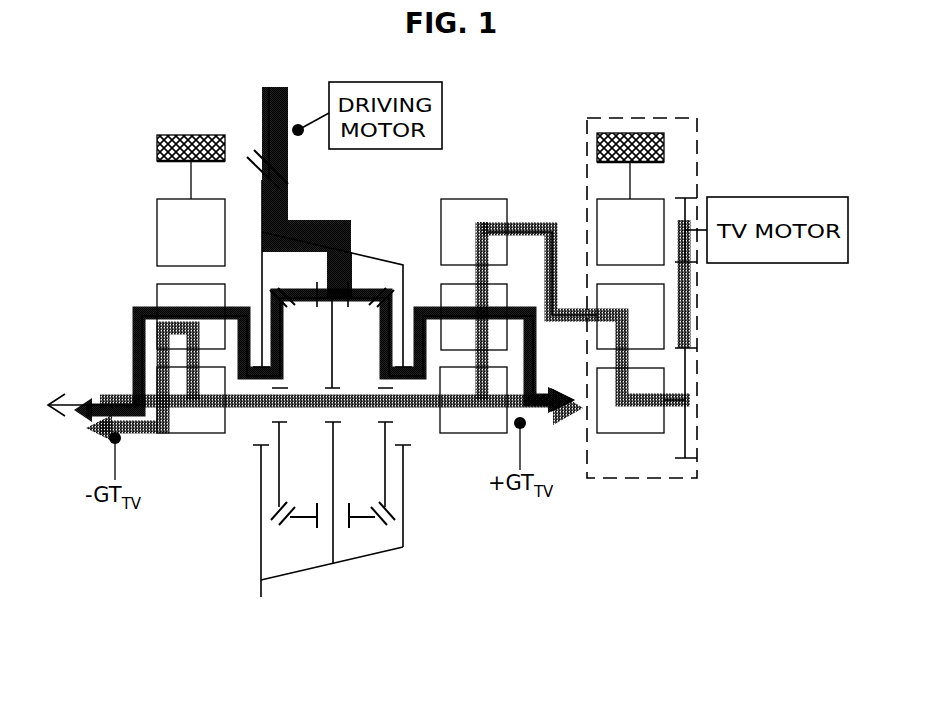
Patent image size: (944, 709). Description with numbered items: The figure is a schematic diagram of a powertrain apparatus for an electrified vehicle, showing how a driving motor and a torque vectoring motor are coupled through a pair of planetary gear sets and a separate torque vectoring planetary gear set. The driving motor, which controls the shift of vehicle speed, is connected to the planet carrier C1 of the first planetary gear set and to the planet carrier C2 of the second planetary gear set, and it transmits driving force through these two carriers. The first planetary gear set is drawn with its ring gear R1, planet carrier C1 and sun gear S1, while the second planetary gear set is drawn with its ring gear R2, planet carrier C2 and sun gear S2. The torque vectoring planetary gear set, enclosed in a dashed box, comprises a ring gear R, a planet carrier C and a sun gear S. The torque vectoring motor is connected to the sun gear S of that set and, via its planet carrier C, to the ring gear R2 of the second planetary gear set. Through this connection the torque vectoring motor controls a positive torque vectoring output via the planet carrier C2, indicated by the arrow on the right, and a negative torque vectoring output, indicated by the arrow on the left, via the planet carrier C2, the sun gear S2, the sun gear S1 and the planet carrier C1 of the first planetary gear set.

The ring gear of first planetary gear set R1 is at (191, 200).
The planet carrier of first planetary gear set C1 is at (191, 316).
The sun gear of first planetary gear set S1 is at (191, 400).
The ring gear of second planetary gear set R2 is at (474, 232).
The planet carrier of second planetary gear set C2 is at (474, 317).
The sun gear of second planetary gear set S2 is at (473, 400).
The ring gear of TV planetary gear set R is at (630, 199).
The planet carrier of TV planetary gear set C is at (630, 316).
The sun gear of TV planetary gear set S is at (630, 400).